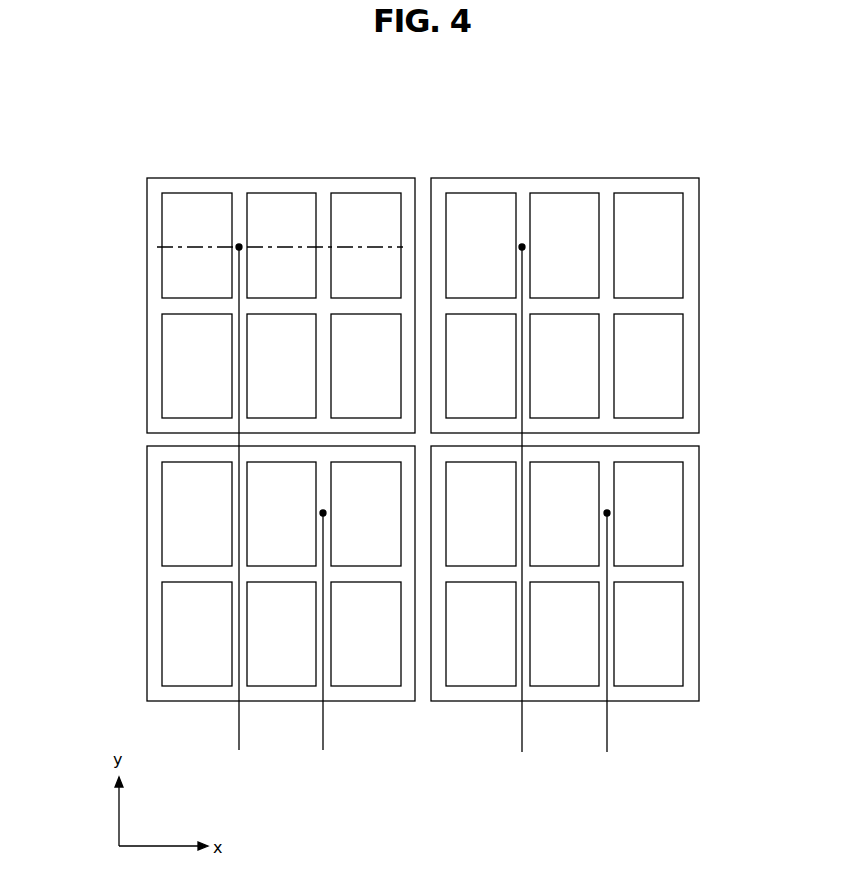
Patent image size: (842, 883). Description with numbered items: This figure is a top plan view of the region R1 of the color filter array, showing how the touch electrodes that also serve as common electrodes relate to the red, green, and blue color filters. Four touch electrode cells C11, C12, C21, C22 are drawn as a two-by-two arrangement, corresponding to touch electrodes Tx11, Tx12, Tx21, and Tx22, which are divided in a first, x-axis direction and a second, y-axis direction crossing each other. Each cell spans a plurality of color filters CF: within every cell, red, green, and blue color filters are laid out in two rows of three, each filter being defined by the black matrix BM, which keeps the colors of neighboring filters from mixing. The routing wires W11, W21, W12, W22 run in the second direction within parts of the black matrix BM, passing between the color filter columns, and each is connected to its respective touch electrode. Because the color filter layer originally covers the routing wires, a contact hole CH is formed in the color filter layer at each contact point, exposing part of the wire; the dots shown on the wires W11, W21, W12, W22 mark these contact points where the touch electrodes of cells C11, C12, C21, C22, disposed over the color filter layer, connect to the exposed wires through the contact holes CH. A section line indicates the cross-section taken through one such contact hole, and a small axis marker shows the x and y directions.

The region R1 is at (74, 103).
The touch electrode cell C11 is at (165, 183).
The touch electrode cell C12 is at (452, 183).
The touch electrode cell C21 is at (158, 573).
The touch electrode cell C22 is at (683, 573).
The black matrix BM is at (173, 305).
The color filter CF is at (196, 192).
The contact hole CH is at (240, 246).
The routing wire W11 is at (245, 511).
The routing wire W21 is at (328, 643).
The routing wire W12 is at (526, 510).
The routing wire W22 is at (611, 643).